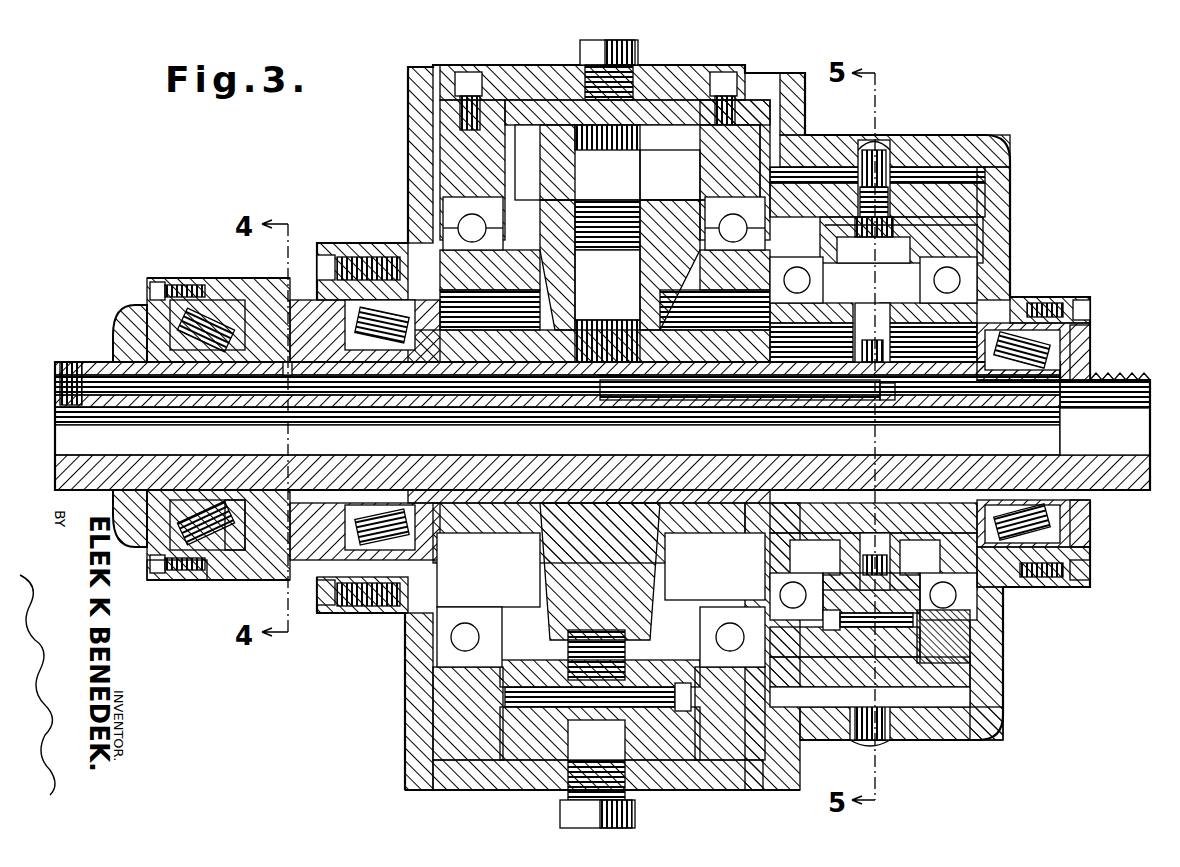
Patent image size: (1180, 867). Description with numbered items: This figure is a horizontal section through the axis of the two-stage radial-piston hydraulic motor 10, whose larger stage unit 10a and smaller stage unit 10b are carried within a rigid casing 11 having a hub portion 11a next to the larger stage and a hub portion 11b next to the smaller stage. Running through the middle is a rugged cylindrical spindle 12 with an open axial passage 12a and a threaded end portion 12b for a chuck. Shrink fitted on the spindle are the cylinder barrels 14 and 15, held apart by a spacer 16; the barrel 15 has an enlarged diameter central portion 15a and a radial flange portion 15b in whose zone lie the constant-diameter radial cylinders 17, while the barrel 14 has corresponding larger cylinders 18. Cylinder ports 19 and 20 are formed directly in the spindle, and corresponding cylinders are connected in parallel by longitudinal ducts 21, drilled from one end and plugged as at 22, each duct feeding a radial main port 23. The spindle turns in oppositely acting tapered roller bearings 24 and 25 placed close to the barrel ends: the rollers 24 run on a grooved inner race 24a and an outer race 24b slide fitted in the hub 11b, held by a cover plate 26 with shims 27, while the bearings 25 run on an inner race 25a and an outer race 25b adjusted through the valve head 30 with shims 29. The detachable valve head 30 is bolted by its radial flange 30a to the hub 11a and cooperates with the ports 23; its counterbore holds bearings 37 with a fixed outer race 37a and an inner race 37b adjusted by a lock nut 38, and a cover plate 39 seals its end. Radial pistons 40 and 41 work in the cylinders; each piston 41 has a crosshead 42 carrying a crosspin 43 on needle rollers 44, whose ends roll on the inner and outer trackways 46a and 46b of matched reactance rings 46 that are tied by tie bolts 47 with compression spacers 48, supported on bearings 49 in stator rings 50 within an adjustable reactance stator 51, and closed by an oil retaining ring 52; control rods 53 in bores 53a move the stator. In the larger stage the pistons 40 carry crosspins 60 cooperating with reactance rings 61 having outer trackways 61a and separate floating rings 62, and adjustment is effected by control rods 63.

The motor 10 is at (394, 224).
The larger motor stage unit 10a is at (388, 614).
The smaller motor stage unit 10b is at (970, 620).
The casing 11 is at (918, 144).
The hub portion of casing 11a is at (378, 246).
The hub portion of casing 11b is at (1014, 298).
The spindle 12 is at (722, 510).
The axial passage 12a is at (602, 426).
The threaded end portion 12b is at (1108, 380).
The cylinder barrel 14 is at (652, 556).
The cylinder barrel 15 is at (873, 546).
The enlarged diameter central portion 15a is at (895, 545).
The radial flange portion 15b is at (868, 545).
The spacer 16 is at (745, 510).
The radial cylinders 17 is at (875, 351).
The radial cylinders 18 is at (607, 341).
The cylinder ports 19 is at (875, 391).
The cylinder ports 20 is at (605, 377).
The longitudinal ducts 21 is at (740, 390).
The plug 22 is at (60, 384).
The radial main port 23 is at (289, 372).
The bearings 24 is at (1022, 436).
The inner race 24a is at (985, 500).
The outer race 24b is at (1082, 334).
The bearings 25 is at (292, 425).
The inner race 25a is at (367, 505).
The outer race 25b is at (286, 298).
The cover plate 26 is at (1088, 306).
The shims 27 is at (1066, 300).
The shims 29 is at (326, 256).
The valve head 30 is at (228, 282).
The radial flange 30a is at (316, 602).
The bearings 37 is at (212, 568).
The outer race 37a is at (235, 555).
The inner race 37b is at (150, 572).
The lock nut 38 is at (140, 538).
The cover plate 39 is at (130, 316).
The radial pistons 40 is at (620, 265).
The radial pistons 41 is at (872, 332).
The crosshead 42 is at (905, 210).
The crosspin 43 is at (873, 240).
The needle rollers 44 is at (925, 243).
The reactance rings 46 is at (785, 572).
The inner reactance trackway 46a is at (958, 250).
The outer reactance trackway 46b is at (925, 278).
The tie bolts 47 is at (900, 680).
The compression spacers 48 is at (830, 672).
The anti-friction bearings 49 is at (975, 592).
The stator rings 50 is at (965, 645).
The reactance stator 51 is at (962, 675).
The oil retaining ring 52 is at (910, 228).
The control rods 53 is at (882, 150).
The bores 53a is at (870, 142).
The crosspins 60 is at (607, 142).
The reactance rings 61 is at (670, 173).
The outer reactance trackways 61a is at (640, 165).
The floating rings 62 is at (555, 195).
The control rods 63 is at (640, 55).